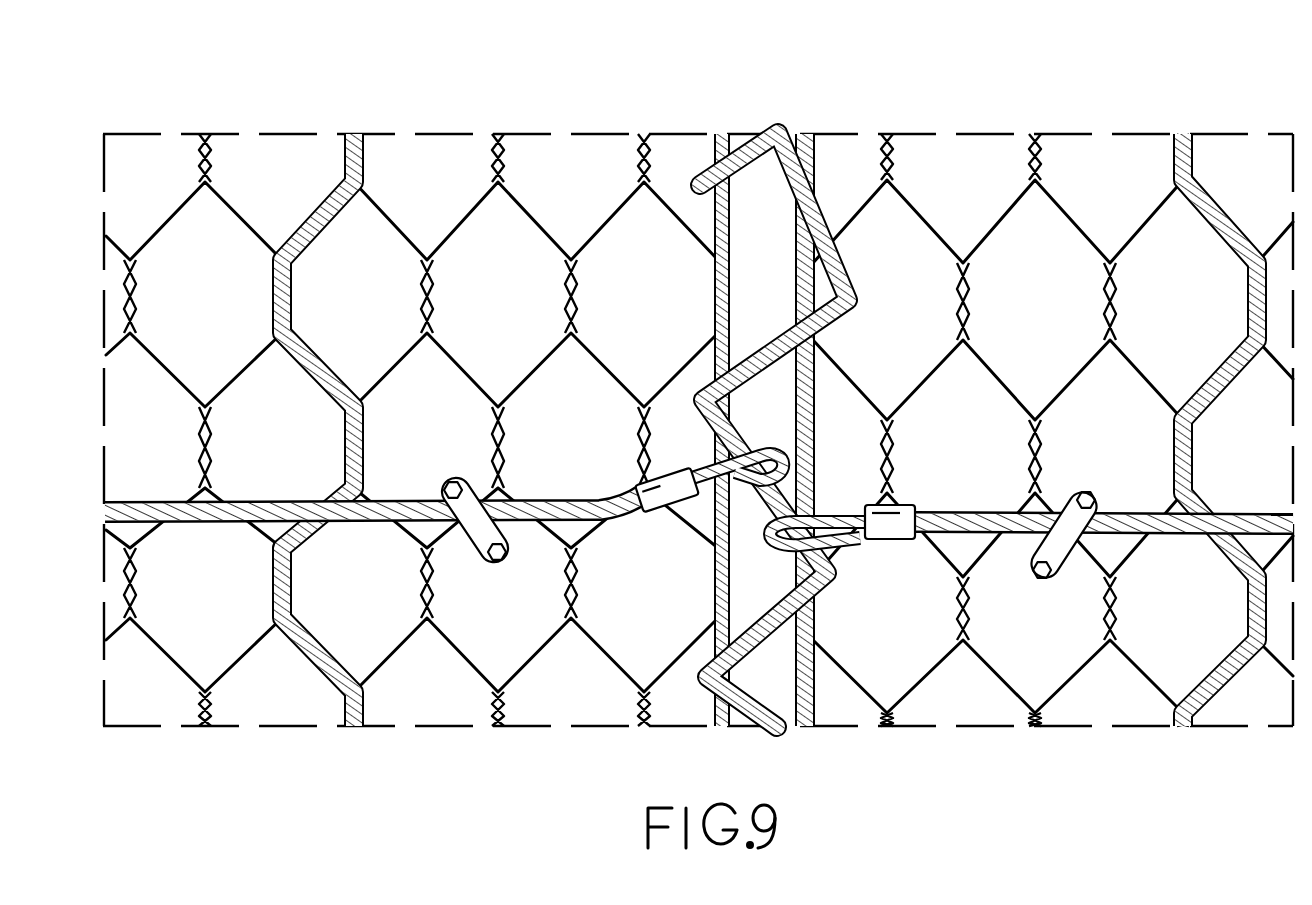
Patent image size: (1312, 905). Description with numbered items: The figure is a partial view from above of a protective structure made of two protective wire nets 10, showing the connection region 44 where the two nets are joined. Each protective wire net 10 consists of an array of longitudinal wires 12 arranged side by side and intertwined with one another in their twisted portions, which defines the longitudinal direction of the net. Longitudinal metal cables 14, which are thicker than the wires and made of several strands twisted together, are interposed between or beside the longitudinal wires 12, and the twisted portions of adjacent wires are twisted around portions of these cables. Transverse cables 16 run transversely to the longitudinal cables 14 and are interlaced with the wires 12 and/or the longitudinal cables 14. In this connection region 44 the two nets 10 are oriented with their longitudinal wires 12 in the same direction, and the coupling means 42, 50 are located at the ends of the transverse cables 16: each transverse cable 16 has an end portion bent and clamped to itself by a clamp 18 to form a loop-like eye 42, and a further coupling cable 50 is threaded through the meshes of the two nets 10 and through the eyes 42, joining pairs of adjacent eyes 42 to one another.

The protective wire net 10 is at (698, 482).
The longitudinal wire 12 is at (395, 222).
The longitudinal metal cable 14 is at (322, 214).
The transverse cable 16 is at (210, 525).
The cable clamp 18 is at (474, 546).
The eye 42 is at (703, 457).
The panel joint 44 is at (866, 103).
The cable 50 is at (765, 612).